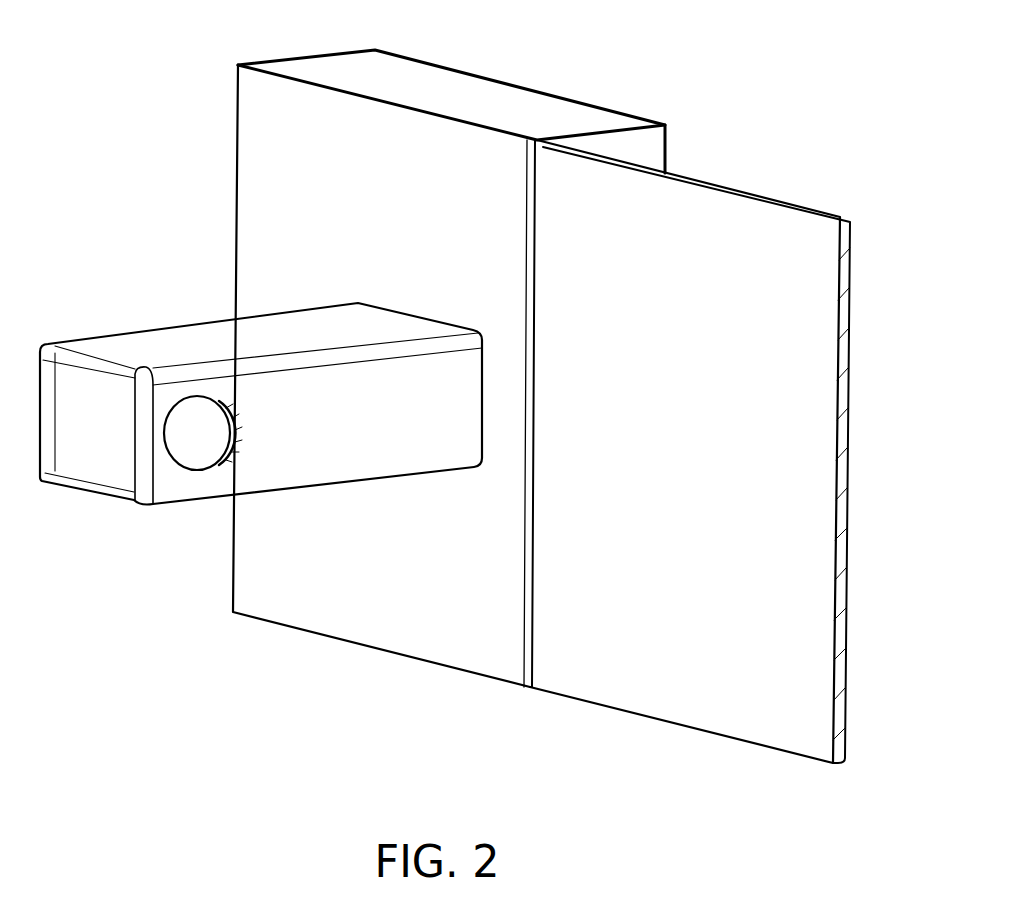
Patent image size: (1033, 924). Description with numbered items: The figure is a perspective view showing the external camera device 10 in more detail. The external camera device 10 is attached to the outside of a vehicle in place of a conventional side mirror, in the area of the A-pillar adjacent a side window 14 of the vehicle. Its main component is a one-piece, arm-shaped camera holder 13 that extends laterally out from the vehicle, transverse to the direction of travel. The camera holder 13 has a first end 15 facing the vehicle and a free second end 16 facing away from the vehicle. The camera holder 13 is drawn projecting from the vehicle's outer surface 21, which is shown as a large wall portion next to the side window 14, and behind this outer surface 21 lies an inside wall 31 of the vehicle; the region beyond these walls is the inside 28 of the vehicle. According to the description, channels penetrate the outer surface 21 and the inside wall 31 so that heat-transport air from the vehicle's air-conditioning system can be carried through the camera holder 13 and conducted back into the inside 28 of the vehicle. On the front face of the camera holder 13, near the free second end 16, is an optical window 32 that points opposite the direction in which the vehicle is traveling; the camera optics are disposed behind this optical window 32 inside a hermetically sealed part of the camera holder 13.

The external camera device 10 is at (118, 130).
The camera holder 13 is at (150, 329).
The side window 14 is at (671, 382).
The first end 15 is at (434, 308).
The second end 16 is at (82, 421).
The outer surface 21 is at (302, 201).
The inside 28 is at (718, 95).
The inside wall 31 is at (506, 84).
The optical window 32 is at (186, 441).